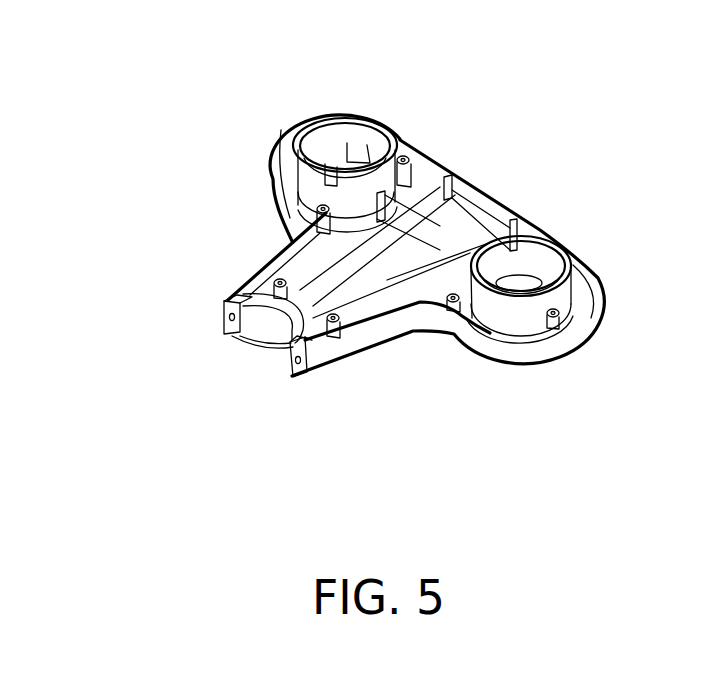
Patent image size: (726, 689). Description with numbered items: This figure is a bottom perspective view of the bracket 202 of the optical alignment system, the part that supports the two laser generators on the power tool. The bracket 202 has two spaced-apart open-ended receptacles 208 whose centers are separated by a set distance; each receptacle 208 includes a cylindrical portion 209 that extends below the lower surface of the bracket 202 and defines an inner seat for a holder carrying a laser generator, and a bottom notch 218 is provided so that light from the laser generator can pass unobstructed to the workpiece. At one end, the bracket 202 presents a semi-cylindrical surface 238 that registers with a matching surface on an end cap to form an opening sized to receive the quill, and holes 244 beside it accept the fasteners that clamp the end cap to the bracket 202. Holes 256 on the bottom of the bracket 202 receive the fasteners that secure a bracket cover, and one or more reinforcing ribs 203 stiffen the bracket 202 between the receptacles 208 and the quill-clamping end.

The bracket 202 is at (259, 80).
The reinforcing rib 203 is at (367, 252).
The open-ended receptacle 208 is at (340, 130).
The cylindrical portion 209 is at (308, 152).
The bottom notch 218 is at (517, 277).
The semi-cylindrical surface 238 is at (262, 330).
The hole 244 is at (223, 317).
The hole 256 is at (407, 156).